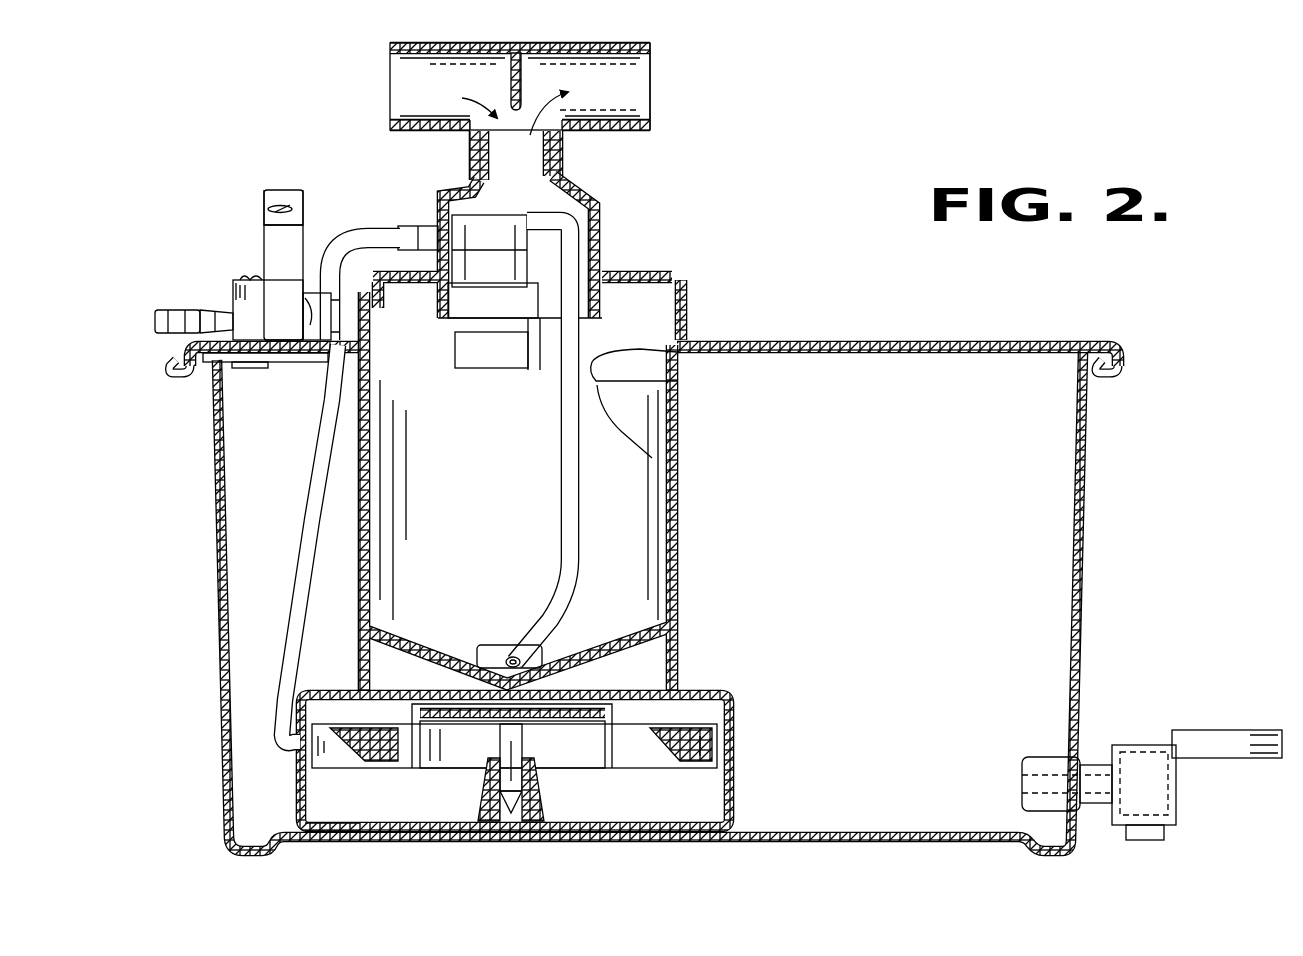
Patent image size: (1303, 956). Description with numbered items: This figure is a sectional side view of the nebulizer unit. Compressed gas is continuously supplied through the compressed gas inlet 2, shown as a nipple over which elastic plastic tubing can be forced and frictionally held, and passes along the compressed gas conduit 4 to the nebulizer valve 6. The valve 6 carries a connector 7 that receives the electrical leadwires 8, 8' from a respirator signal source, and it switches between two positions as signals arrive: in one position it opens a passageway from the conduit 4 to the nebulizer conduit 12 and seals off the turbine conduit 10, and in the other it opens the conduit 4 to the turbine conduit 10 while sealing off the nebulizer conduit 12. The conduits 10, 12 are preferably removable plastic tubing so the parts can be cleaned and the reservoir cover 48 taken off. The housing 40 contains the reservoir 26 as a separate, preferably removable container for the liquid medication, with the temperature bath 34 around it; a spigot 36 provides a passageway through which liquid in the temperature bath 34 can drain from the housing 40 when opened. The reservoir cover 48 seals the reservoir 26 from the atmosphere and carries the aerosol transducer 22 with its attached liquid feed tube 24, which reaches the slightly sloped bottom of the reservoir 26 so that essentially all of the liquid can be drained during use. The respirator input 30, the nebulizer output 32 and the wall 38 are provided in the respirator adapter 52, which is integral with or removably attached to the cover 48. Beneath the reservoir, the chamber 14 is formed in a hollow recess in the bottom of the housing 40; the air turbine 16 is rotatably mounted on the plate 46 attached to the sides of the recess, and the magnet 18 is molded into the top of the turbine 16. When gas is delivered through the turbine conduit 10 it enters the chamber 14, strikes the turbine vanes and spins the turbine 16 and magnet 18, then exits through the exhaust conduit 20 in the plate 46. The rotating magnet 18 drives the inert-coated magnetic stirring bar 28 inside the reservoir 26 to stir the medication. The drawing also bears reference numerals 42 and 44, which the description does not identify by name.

The compressed gas inlet 2 is at (170, 316).
The compressed gas conduit 4 is at (240, 285).
The nebulizer valve 6 is at (262, 250).
The connector 7 is at (299, 190).
The electrical leadwire 8 is at (246, 186).
The electrical leadwire 8' is at (262, 171).
The turbine conduit 10 is at (265, 728).
The nebulizer conduit 12 is at (380, 232).
The chamber 14 is at (363, 800).
The air turbine 16 is at (655, 753).
The magnet 18 is at (560, 726).
The exhaust conduit 20 is at (698, 830).
The aerosol transducer 22 is at (495, 245).
The liquid feed tube 24 is at (575, 528).
The reservoir 26 is at (630, 467).
The magnetic stirring bar 28 is at (532, 655).
The respirator input 30 is at (390, 80).
The nebulizer output 32 is at (650, 68).
The temperature bath 34 is at (1025, 577).
The spigot 36 is at (1146, 737).
The wall 38 is at (505, 92).
The housing 40 is at (1094, 490).
The lid flange 42 is at (1055, 342).
The lid 44 is at (995, 341).
The plate 46 is at (322, 830).
The reservoir cover 48 is at (630, 273).
The respirator adapter 52 is at (600, 46).